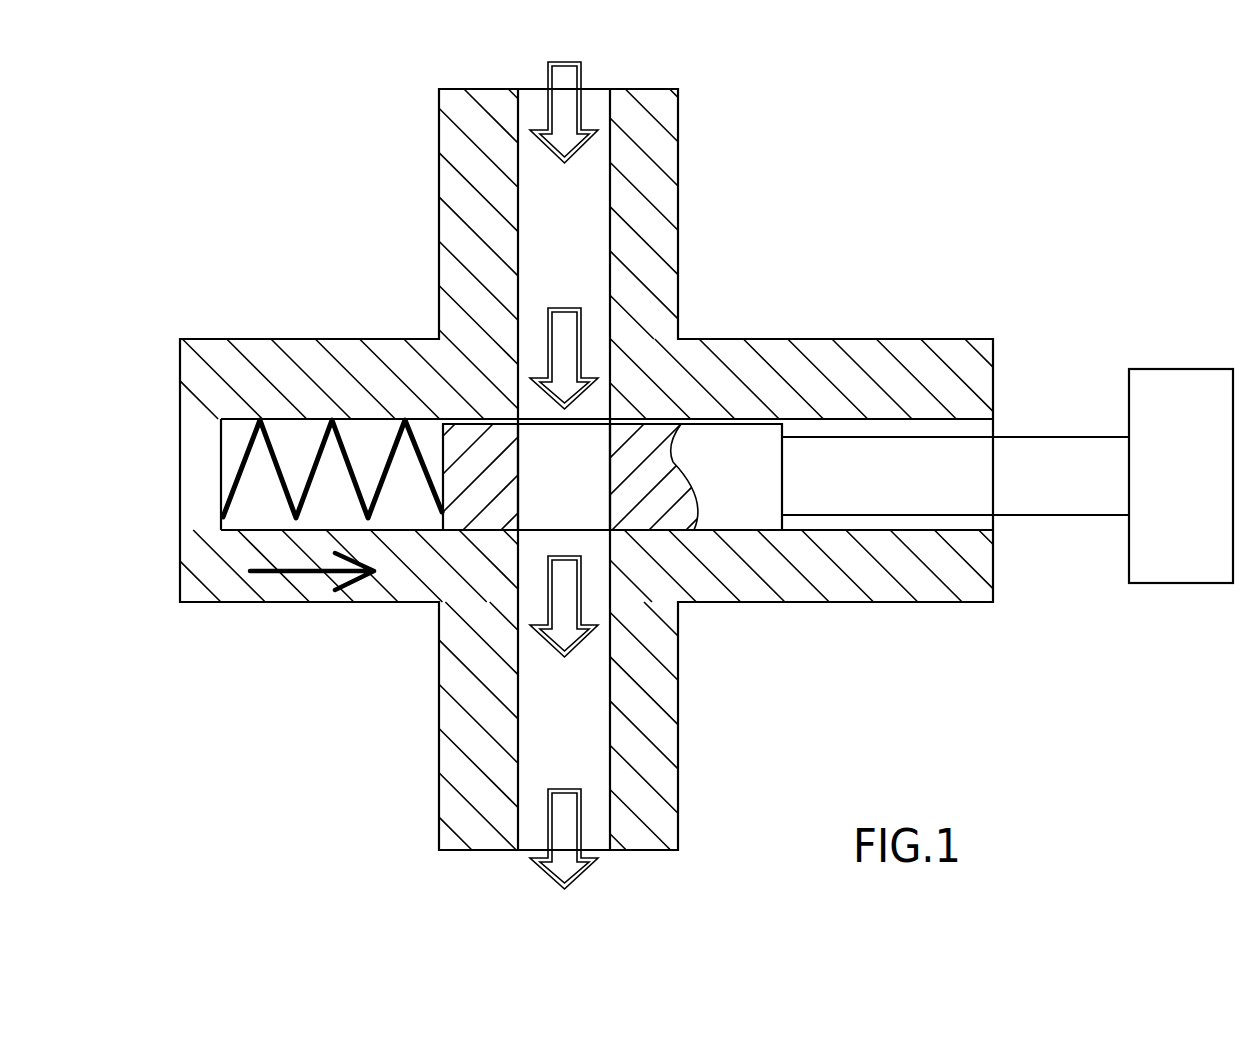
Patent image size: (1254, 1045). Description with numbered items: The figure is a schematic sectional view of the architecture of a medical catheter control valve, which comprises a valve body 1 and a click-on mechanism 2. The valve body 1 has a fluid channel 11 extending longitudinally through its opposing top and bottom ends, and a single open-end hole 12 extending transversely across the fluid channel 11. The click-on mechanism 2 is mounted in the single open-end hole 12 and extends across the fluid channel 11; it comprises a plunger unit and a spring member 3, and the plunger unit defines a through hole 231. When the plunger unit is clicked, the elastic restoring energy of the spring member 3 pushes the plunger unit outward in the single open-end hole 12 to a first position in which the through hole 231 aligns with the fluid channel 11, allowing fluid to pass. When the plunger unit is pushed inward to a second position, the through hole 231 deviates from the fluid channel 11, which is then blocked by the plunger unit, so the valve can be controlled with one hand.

The valve body 1 is at (679, 245).
The fluid channel 11 is at (560, 208).
The single open-end hole 12 is at (907, 420).
The click-on mechanism 2 is at (823, 522).
The through hole 231 is at (563, 482).
The spring member 3 is at (246, 445).